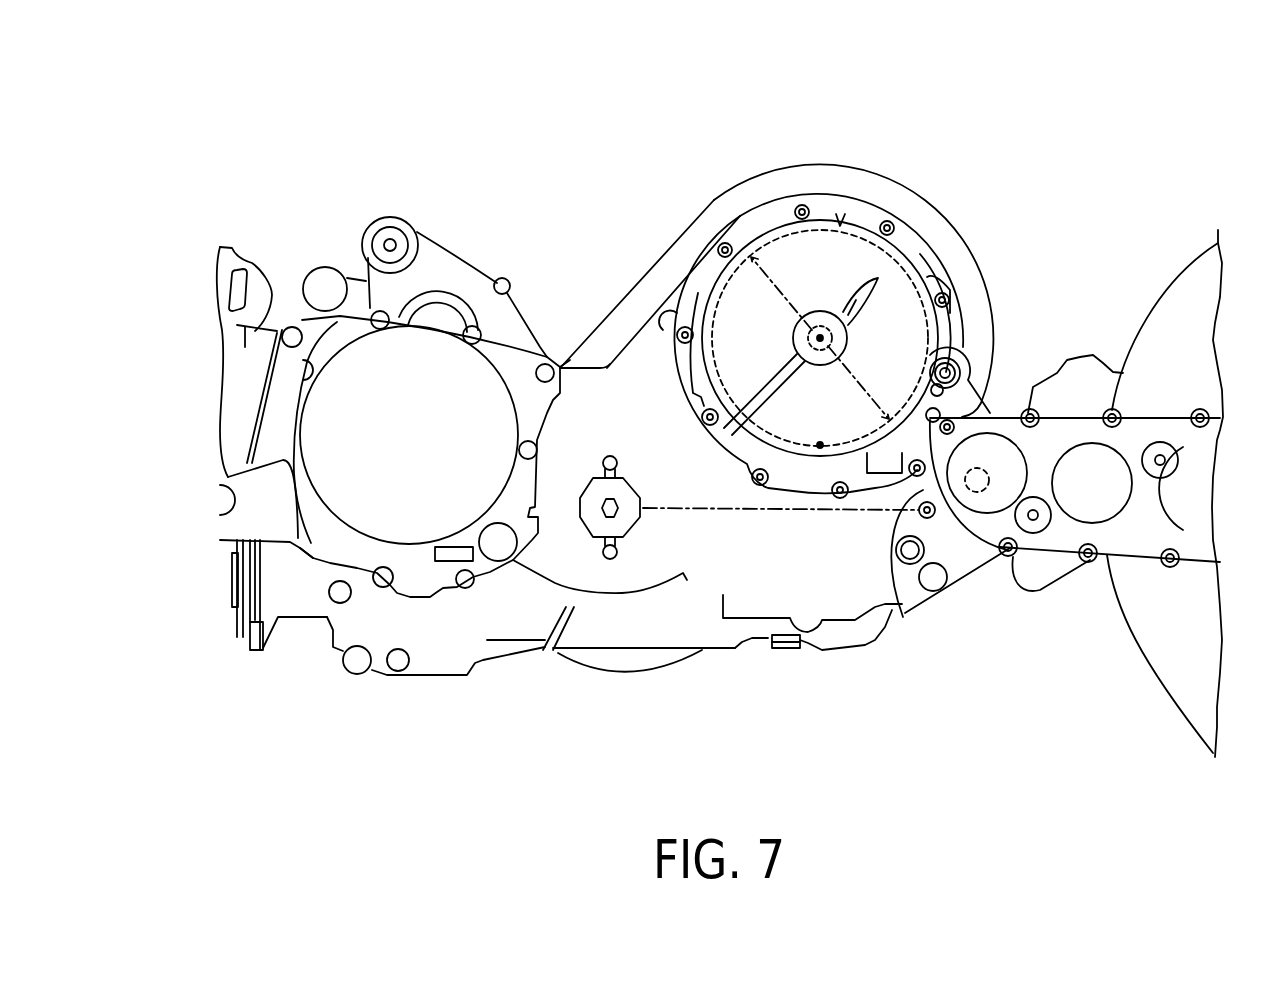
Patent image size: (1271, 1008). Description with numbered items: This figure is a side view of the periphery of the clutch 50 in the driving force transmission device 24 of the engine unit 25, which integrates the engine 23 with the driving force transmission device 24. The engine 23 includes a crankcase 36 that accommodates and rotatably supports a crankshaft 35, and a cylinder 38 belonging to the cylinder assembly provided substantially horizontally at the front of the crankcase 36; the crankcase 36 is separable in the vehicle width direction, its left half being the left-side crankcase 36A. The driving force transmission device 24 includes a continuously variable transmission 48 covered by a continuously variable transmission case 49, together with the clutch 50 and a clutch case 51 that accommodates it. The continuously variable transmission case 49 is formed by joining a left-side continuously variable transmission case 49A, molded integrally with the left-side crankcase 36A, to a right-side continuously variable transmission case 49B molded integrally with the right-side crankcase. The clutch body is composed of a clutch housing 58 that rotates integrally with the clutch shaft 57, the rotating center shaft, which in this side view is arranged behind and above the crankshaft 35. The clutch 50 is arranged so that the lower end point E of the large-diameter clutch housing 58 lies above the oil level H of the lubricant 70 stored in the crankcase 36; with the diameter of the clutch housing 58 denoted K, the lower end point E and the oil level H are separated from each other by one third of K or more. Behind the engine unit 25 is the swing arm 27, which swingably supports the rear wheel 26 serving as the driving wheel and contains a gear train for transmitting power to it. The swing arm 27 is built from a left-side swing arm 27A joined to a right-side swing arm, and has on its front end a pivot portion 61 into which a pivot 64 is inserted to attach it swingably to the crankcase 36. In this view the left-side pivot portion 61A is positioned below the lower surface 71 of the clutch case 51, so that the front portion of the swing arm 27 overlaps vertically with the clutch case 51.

The engine 23 is at (347, 680).
The driving force transmission device 24 is at (748, 672).
The engine unit 25 is at (558, 674).
The rear wheel 26 is at (1143, 663).
The swing arm 27 is at (1076, 493).
The left-side swing arm 27A is at (1090, 357).
The crankshaft 35 is at (411, 425).
The crankcase 36 is at (436, 708).
The left-side crankcase 36A is at (430, 662).
The cylinder 38 is at (255, 295).
The continuously variable transmission 48 is at (825, 180).
The continuously variable transmission case 49 is at (776, 235).
The left-side continuously variable transmission case 49A is at (747, 180).
The right-side continuously variable transmission case 49B is at (677, 227).
The clutch 50 is at (842, 214).
The clutch case 51 is at (940, 328).
The clutch shaft 57 is at (905, 275).
The clutch housing 58 is at (857, 230).
The pivot portion 61 is at (937, 629).
The left-side pivot portion 61A is at (903, 617).
The pivot 64 is at (982, 468).
The lubricant 70 is at (677, 505).
The lower surface 71 is at (923, 490).
The lower end point E is at (817, 455).
The oil level H is at (775, 510).
The diameter K is at (783, 285).